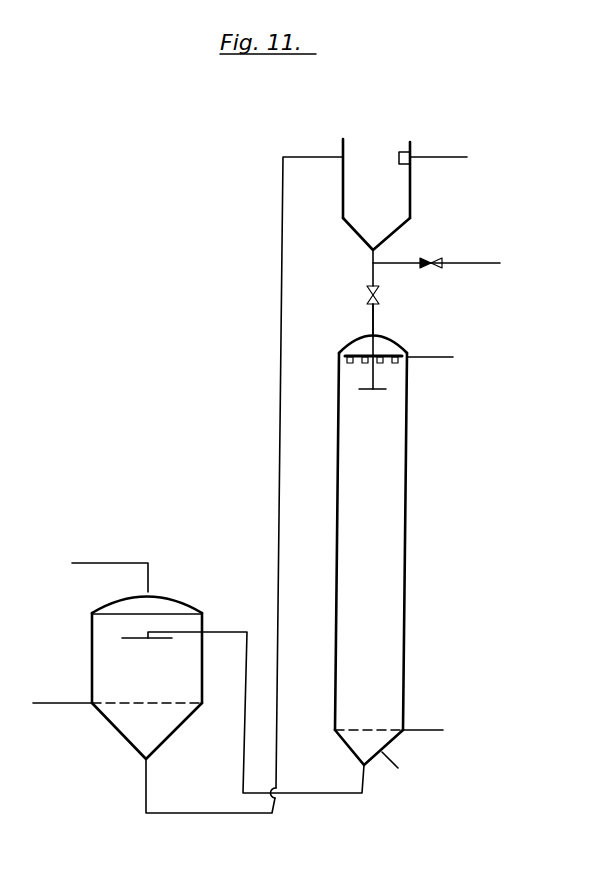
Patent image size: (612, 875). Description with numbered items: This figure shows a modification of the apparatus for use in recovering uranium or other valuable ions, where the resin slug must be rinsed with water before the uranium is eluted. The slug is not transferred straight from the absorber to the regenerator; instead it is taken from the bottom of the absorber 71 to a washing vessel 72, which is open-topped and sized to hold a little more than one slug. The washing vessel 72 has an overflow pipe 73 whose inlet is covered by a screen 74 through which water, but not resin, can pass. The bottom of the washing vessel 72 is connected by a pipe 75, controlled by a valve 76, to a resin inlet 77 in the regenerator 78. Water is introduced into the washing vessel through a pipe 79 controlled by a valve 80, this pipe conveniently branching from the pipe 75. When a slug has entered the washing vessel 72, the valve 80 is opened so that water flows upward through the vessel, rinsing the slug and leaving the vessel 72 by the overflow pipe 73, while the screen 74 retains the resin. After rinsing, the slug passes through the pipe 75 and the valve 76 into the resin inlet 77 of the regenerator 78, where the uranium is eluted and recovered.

The absorber 71 is at (92, 648).
The washing vessel 72 is at (412, 198).
The overflow pipe 73 is at (457, 158).
The screen 74 is at (400, 151).
The pipe 75 is at (368, 313).
The valve 76 is at (377, 300).
The resin inlet 77 is at (362, 391).
The regenerator 78 is at (408, 442).
The pipe 79 is at (487, 263).
The valve 80 is at (433, 261).